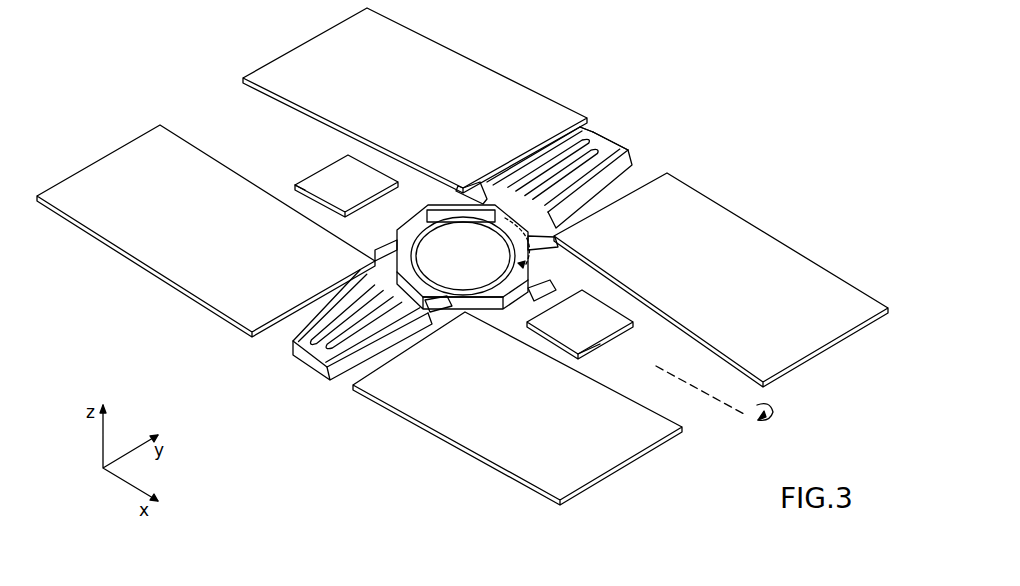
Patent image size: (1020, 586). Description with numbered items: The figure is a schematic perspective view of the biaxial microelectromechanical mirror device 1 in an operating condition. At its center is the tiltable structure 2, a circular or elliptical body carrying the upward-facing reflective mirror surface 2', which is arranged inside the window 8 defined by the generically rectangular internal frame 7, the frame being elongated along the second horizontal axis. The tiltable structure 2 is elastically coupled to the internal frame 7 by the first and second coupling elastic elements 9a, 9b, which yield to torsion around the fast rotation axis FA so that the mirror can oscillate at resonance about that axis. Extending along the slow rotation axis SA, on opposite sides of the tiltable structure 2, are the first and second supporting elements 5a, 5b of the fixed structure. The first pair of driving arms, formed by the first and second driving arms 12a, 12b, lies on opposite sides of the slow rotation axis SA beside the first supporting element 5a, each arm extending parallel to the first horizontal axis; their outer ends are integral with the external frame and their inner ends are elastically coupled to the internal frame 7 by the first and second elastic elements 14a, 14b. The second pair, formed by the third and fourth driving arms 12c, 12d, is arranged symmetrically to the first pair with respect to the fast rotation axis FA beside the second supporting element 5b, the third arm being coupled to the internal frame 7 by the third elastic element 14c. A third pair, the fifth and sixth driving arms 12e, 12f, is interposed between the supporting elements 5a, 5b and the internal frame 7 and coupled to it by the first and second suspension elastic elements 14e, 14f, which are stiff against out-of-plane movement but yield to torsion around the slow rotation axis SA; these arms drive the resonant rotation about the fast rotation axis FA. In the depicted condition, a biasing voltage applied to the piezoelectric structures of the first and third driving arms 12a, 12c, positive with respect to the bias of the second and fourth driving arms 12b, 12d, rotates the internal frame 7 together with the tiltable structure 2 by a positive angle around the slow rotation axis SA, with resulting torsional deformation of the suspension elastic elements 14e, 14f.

The microelectromechanical mirror device 1 is at (692, 130).
The tiltable structure 2 is at (384, 294).
The reflective mirror surface 2' is at (400, 360).
The first supporting element 5a is at (297, 190).
The second supporting element 5b is at (603, 347).
The internal frame 7 is at (593, 131).
The window 8 is at (635, 135).
The first coupling elastic element 9a is at (487, 180).
The second coupling elastic element 9b is at (323, 363).
The first driving arm 12a is at (512, 102).
The second driving arm 12b is at (142, 240).
The third driving arm 12c is at (758, 257).
The fourth driving arm 12d is at (418, 398).
The fifth driving arm 12e is at (330, 167).
The sixth driving arm 12f is at (597, 310).
The first elastic element 14a is at (558, 180).
The second elastic element 14b is at (285, 322).
The third elastic element 14c is at (560, 230).
The first suspension elastic element 14e is at (461, 173).
The second suspension elastic element 14f is at (560, 293).
The fast rotation axis FA is at (640, 114).
The slow rotation axis SA is at (738, 420).